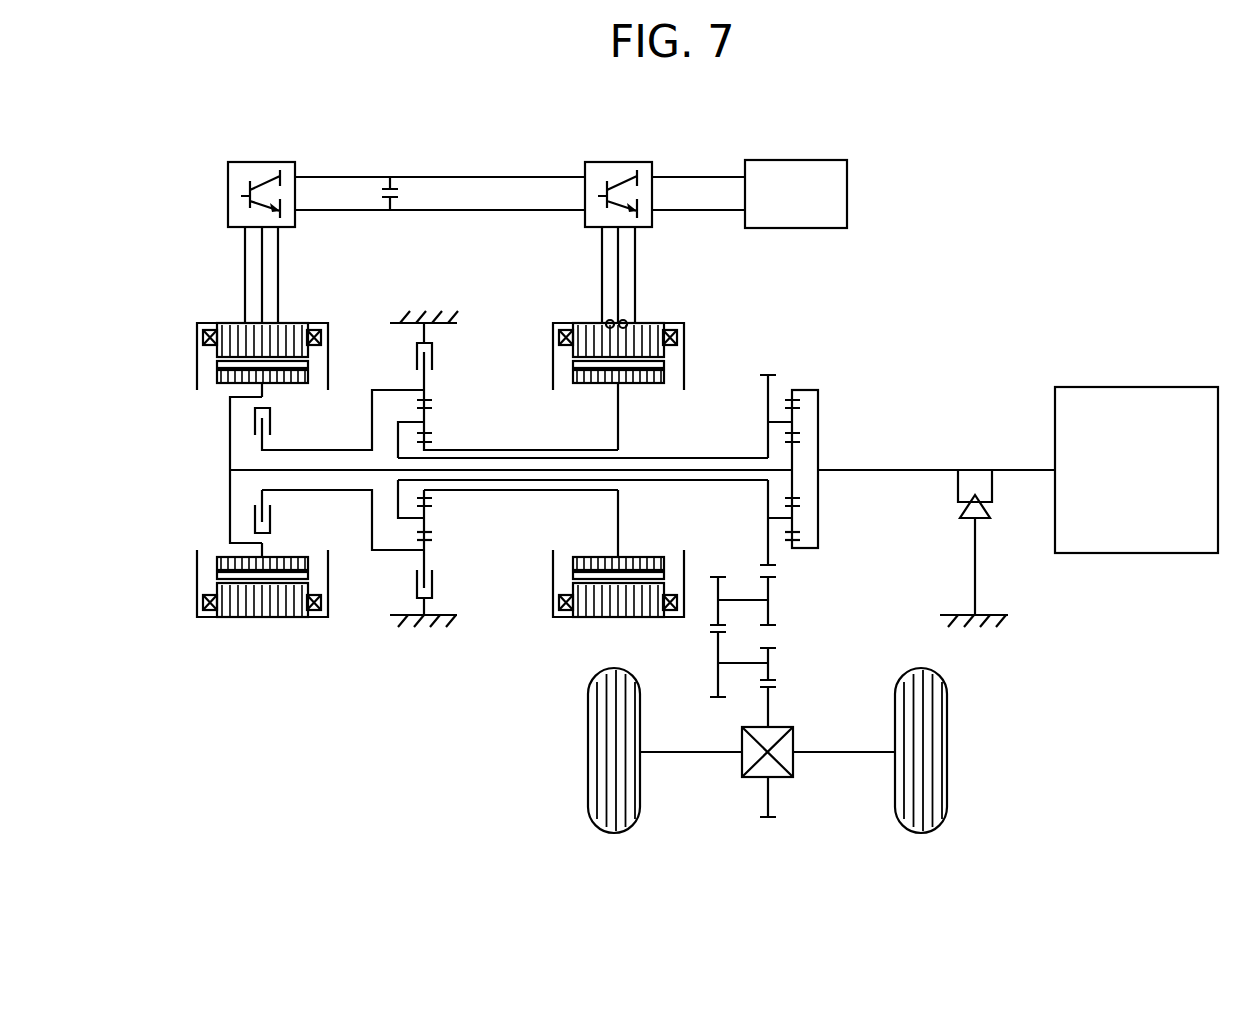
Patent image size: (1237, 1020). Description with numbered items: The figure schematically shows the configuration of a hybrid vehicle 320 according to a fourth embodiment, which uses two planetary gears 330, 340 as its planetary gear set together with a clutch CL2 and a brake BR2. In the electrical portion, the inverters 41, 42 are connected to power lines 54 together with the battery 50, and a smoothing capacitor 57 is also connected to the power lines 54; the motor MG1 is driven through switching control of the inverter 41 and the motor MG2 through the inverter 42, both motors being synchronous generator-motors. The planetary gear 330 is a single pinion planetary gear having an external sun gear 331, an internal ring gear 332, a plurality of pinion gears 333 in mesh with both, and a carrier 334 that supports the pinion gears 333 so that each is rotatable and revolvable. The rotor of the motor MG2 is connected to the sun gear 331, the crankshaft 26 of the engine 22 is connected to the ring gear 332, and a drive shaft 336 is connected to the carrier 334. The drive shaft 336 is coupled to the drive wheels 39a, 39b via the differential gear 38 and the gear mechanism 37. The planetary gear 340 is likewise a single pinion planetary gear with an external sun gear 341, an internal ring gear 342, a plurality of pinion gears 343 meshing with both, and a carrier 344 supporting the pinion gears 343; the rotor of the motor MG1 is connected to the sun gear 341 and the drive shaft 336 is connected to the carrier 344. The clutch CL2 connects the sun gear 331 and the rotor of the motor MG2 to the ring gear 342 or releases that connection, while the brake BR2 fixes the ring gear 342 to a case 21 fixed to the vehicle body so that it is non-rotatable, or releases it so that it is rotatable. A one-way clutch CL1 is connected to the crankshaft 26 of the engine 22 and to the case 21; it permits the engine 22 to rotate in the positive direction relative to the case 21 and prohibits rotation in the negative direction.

The hybrid vehicle 320 is at (969, 124).
The inverter 42 is at (262, 162).
The inverter 41 is at (618, 162).
The battery 50 is at (790, 160).
The power lines 54 is at (484, 205).
The smoothing capacitor 57 is at (397, 185).
The motor MG2 is at (308, 323).
The motor MG1 is at (655, 323).
The brake BR2 is at (417, 357).
The clutch CL2 is at (253, 422).
The one-way clutch CL1 is at (982, 500).
The planetary gear 340 is at (583, 454).
The sun gear 341 is at (426, 495).
The ring gear 342 is at (426, 553).
The pinion gears 343 is at (426, 523).
The carrier 344 is at (400, 432).
The planetary gear 330 is at (644, 439).
The sun gear 331 is at (796, 492).
The ring gear 332 is at (796, 543).
The pinion gears 333 is at (796, 517).
The carrier 334 is at (782, 420).
The drive shaft 336 is at (722, 458).
The engine 22 is at (1135, 387).
The crankshaft 26 is at (1007, 468).
The case 21 is at (1000, 604).
The gear mechanism 37 is at (786, 612).
The differential gear 38 is at (742, 742).
The drive wheel 39a is at (586, 750).
The drive wheel 39b is at (950, 750).